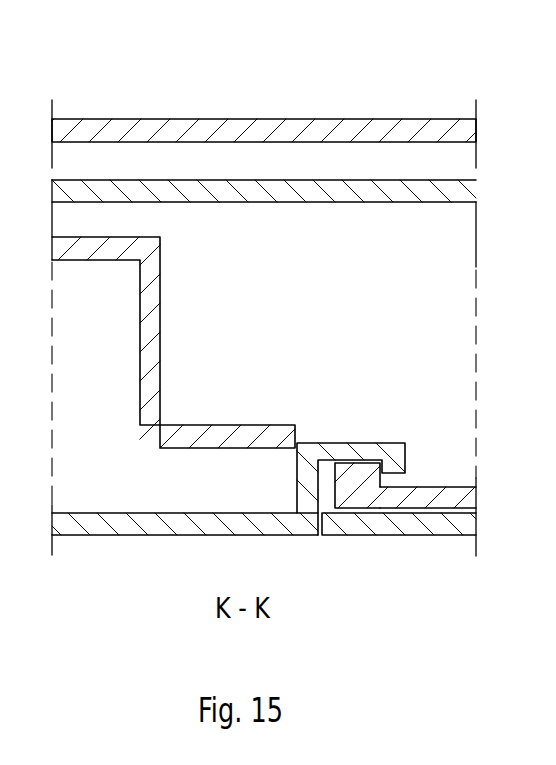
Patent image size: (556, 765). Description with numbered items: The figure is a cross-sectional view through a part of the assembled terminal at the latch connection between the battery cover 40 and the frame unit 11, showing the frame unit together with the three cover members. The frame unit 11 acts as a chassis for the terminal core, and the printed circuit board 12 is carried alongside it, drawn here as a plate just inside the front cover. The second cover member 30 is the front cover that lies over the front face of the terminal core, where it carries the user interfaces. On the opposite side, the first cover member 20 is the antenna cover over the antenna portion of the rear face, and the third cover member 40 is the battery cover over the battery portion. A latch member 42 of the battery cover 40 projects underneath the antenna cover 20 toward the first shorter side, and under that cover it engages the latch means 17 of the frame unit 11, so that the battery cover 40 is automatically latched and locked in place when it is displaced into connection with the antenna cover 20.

The second cover member 30 is at (283, 133).
The Printed Circuit Board 12 is at (290, 196).
The frame unit 11 is at (202, 432).
The latch means 17 is at (352, 483).
The latch member 42 is at (333, 450).
The third cover member 40 is at (160, 530).
The first cover member 20 is at (399, 520).